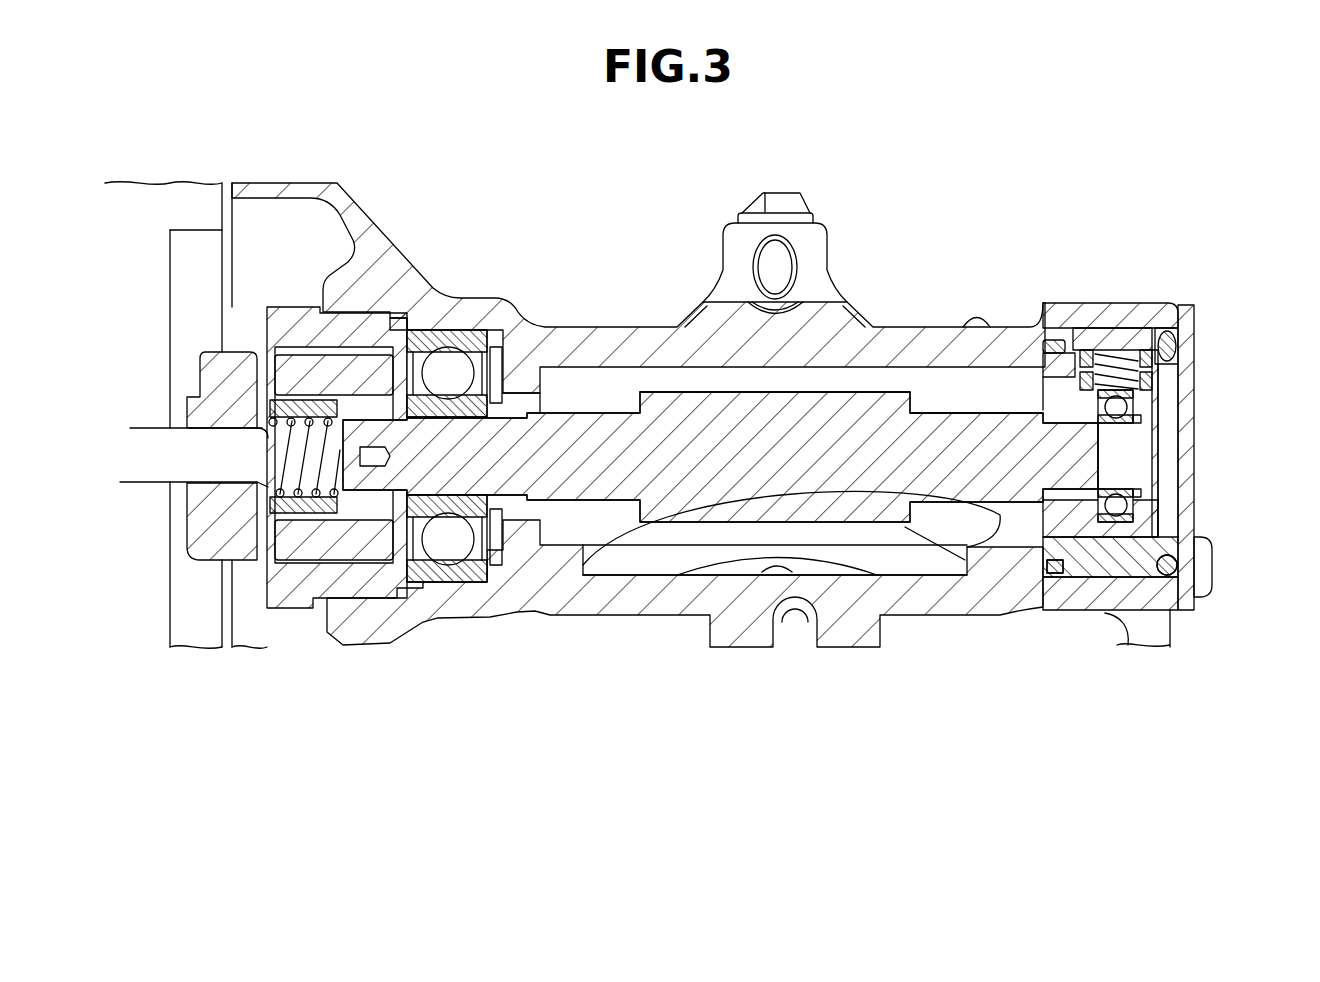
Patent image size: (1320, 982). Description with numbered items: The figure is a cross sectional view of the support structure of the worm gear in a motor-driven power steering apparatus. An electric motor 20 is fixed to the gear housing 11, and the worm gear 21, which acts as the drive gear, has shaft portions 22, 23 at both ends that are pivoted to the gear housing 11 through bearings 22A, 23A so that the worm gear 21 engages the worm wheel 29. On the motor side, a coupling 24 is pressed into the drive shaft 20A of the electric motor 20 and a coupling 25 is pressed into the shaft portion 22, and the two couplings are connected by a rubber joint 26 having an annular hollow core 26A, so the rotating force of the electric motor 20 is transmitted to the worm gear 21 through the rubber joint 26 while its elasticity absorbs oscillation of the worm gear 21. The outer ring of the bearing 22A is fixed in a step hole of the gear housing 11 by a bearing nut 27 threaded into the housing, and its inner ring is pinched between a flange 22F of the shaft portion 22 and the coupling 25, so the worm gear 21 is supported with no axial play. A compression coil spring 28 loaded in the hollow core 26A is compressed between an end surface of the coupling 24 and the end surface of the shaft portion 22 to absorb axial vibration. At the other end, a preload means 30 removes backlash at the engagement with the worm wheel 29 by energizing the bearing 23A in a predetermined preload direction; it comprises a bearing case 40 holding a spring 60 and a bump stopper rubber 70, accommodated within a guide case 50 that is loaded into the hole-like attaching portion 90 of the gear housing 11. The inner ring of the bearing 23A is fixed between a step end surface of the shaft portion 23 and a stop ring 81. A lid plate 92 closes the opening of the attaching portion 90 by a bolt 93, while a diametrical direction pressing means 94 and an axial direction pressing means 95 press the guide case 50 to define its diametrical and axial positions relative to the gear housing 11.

The gear housing 11 is at (700, 343).
The electric motor 20 is at (168, 183).
The drive shaft 20A is at (257, 428).
The worm gear 21 is at (867, 383).
The shaft portion 22 is at (592, 413).
The bearing 22A is at (447, 372).
The flange 22F is at (518, 393).
The shaft portion 23 is at (963, 413).
The bearing 23A is at (1117, 489).
The coupling 24 is at (207, 533).
The coupling 25 is at (307, 547).
The rubber joint 26 is at (277, 500).
The annular hollow core 26A is at (265, 480).
The bearing nut 27 is at (288, 307).
The compression coil spring 28 is at (255, 428).
The worm wheel 29 is at (623, 529).
The preload means 30 is at (1120, 323).
The bearing case 40 is at (1135, 392).
The guide case 50 is at (1145, 330).
The spring 60 is at (1110, 350).
The bump stopper rubber 70 is at (1160, 363).
The stop ring 81 is at (1140, 417).
The attaching portion 90 is at (1117, 567).
The lid plate 92 is at (1194, 500).
The bolt 93 is at (1212, 547).
The diametrical direction pressing means 94 is at (1058, 563).
The axial direction pressing means 95 is at (1177, 563).